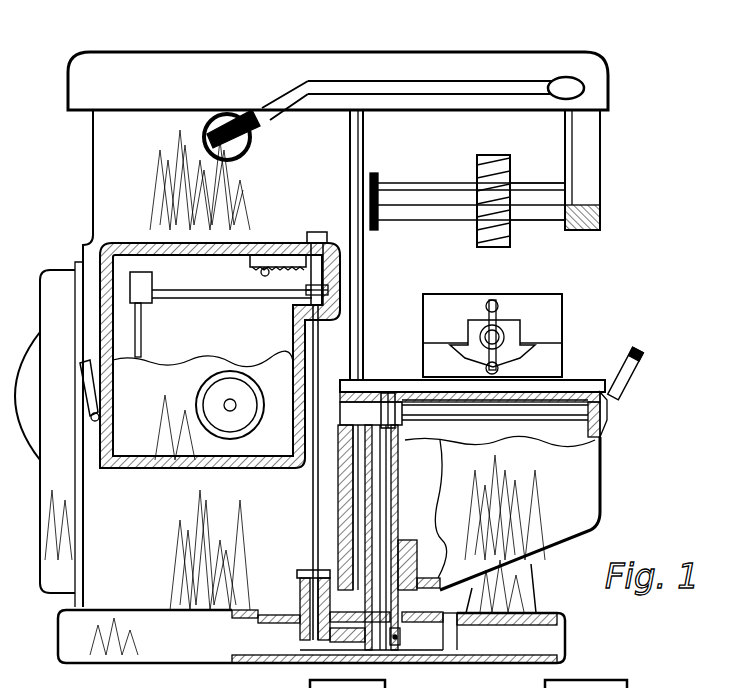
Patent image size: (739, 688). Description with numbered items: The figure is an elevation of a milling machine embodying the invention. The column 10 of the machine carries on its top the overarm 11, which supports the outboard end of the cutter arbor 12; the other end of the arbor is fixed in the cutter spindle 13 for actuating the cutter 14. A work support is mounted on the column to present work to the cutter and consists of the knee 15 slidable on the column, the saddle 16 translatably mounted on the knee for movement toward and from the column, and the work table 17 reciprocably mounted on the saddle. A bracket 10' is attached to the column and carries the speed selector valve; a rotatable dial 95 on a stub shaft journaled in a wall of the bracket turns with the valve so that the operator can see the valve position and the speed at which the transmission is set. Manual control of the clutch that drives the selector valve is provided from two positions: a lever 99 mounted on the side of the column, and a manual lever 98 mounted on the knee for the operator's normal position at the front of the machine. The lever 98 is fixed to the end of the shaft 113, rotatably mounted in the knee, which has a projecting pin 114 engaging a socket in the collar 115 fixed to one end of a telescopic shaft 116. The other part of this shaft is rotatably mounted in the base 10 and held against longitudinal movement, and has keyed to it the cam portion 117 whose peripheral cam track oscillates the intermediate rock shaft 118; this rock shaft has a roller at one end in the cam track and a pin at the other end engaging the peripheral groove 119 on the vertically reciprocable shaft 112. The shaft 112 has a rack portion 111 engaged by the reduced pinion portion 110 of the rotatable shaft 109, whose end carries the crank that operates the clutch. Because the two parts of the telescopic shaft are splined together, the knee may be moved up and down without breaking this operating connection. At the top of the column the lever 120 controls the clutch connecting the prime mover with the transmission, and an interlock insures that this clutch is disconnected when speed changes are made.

The column 10 is at (290, 386).
The bracket 10' is at (220, 355).
The overarm 11 is at (528, 62).
The cutter arbor 12 is at (540, 215).
The cutter spindle 13 is at (380, 176).
The cutter 14 is at (477, 233).
The knee 15 is at (578, 480).
The saddle 16 is at (550, 366).
The work table 17 is at (548, 322).
The rotatable dial 95 is at (238, 422).
The manual lever 98 is at (645, 372).
The lever 99 is at (95, 378).
The rotatable shaft 109 is at (187, 300).
The reduced pinion portion 110 is at (355, 278).
The rack portion 111 is at (350, 311).
The vertically reciprocable shaft 112 is at (313, 490).
The shaft 113 is at (458, 418).
The projecting pin 114 is at (405, 428).
The collar 115 is at (378, 407).
The telescopic shaft 116 is at (382, 510).
The cam portion 117 is at (402, 642).
The intermediate rock shaft 118 is at (366, 642).
The peripheral groove 119 is at (312, 640).
The lever 120 is at (397, 88).